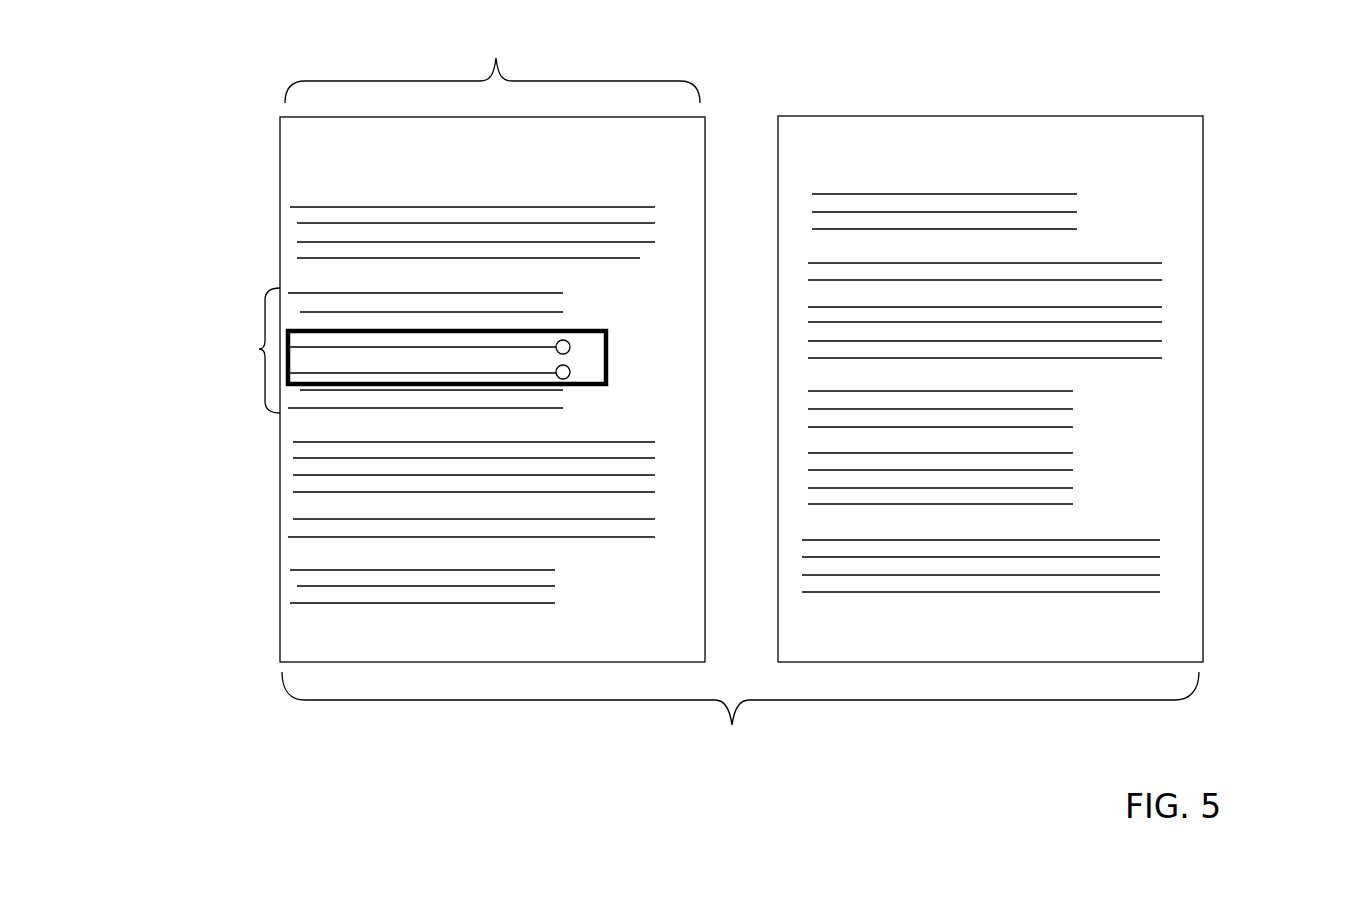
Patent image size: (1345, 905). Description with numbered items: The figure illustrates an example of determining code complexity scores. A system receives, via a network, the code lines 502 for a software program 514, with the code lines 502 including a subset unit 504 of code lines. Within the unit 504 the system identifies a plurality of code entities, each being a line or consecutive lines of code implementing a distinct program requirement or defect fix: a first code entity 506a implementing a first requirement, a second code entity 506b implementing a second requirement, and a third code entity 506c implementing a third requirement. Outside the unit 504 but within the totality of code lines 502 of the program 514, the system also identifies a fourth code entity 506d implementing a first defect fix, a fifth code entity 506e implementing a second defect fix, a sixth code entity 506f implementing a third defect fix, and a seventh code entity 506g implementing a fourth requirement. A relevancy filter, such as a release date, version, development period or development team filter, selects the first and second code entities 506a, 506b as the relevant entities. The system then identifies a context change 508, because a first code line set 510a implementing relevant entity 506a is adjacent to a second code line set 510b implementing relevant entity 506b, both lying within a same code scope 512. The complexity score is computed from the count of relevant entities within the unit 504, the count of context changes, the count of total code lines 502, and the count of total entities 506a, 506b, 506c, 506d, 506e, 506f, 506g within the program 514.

The code lines 502 is at (571, 187).
The subset unit of code lines 504 is at (492, 65).
The first code entity 506a is at (280, 346).
The second code entity 506b is at (280, 537).
The third code entity 506c is at (280, 603).
The fourth code entity 506d is at (1214, 183).
The fifth code entity 506e is at (1214, 262).
The sixth code entity 506f is at (1214, 345).
The seventh code entity 506g is at (1214, 535).
The context change 508 is at (607, 348).
The first code line set 510a is at (570, 343).
The second code line set 510b is at (570, 373).
The code scope 512 is at (259, 349).
The software program 514 is at (740, 718).